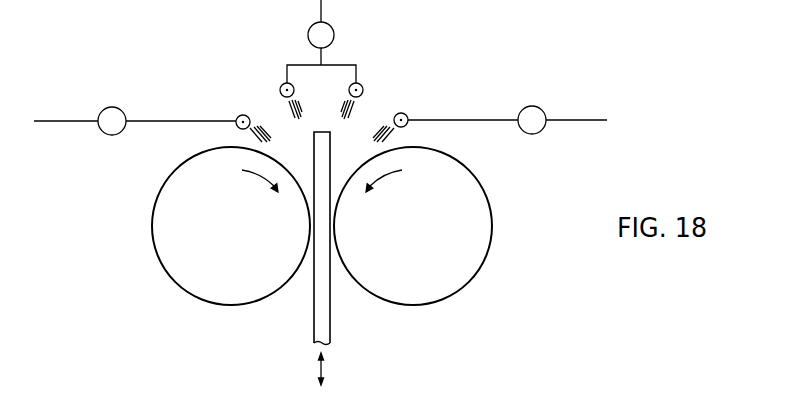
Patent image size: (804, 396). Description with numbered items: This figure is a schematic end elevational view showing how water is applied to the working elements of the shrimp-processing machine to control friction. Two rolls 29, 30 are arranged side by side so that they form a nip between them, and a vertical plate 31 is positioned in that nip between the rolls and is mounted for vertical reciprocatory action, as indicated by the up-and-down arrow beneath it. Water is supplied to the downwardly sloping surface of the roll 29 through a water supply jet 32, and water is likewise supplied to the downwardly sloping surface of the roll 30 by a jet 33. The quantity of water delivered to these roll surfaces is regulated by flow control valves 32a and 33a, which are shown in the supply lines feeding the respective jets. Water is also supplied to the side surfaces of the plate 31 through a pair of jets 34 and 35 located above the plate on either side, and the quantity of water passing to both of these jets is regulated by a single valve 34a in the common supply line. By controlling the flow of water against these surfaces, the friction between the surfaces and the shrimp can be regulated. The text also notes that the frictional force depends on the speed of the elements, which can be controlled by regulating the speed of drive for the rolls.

The roll 29 is at (197, 284).
The roll 30 is at (480, 211).
The vertical plate 31 is at (318, 318).
The water supply jet 32 is at (238, 114).
The flow control valve 32a is at (123, 109).
The jet 33 is at (407, 113).
The flow control valve 33a is at (545, 112).
The jet 34 is at (277, 86).
The valve 34a is at (334, 35).
The jet 35 is at (363, 86).